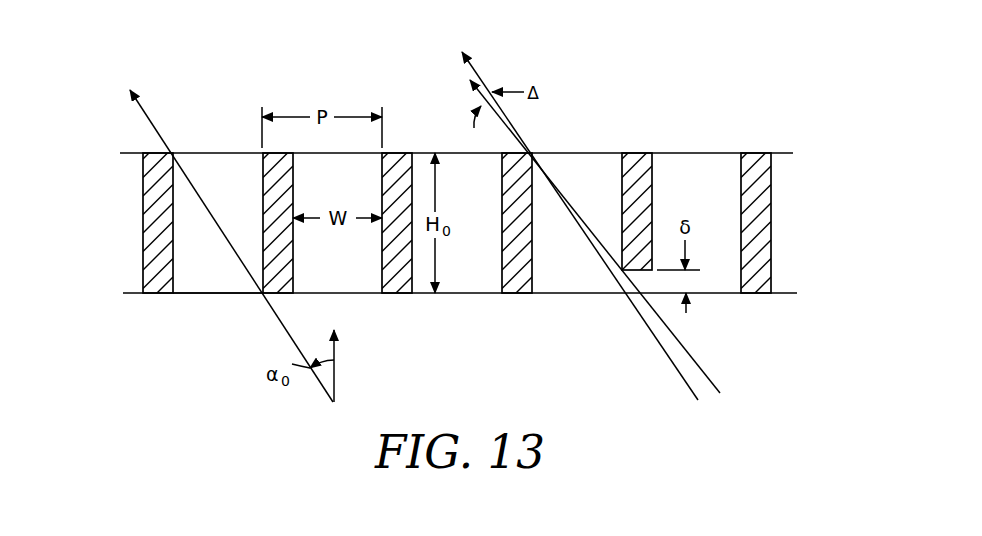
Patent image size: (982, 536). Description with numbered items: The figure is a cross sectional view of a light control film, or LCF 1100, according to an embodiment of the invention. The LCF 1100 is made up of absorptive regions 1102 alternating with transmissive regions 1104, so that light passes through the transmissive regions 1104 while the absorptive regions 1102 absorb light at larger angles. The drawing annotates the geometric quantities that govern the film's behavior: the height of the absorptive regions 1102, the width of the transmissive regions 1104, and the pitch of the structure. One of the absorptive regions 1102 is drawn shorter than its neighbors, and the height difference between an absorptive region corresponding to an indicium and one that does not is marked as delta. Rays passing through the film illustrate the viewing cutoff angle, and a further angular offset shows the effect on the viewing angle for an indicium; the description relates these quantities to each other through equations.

The light control film (LCF) 1100 is at (160, 48).
The absorptive region 1102 is at (157, 293).
The transmissive region 1104 is at (227, 285).